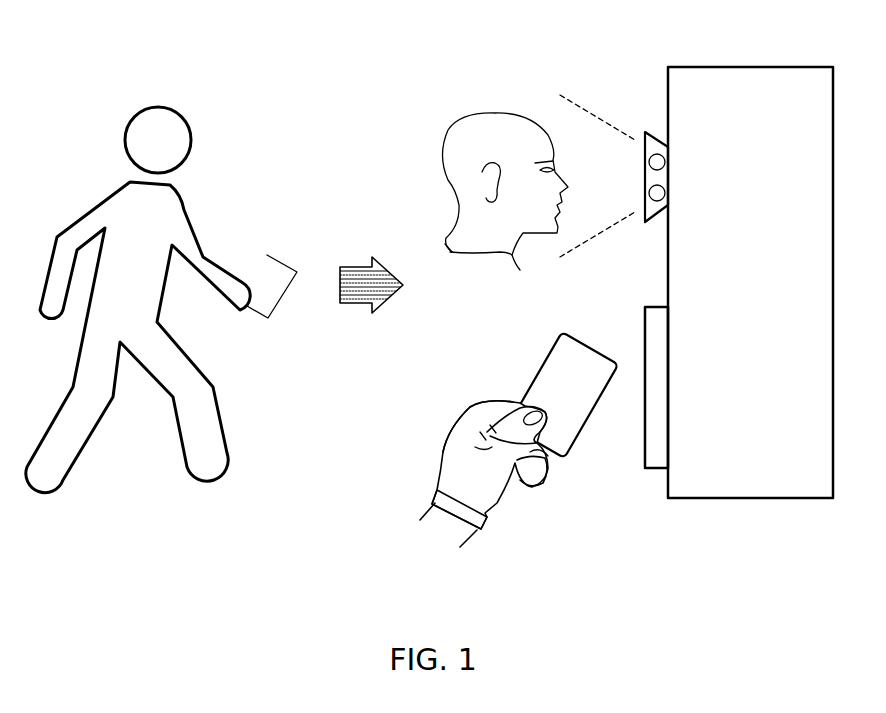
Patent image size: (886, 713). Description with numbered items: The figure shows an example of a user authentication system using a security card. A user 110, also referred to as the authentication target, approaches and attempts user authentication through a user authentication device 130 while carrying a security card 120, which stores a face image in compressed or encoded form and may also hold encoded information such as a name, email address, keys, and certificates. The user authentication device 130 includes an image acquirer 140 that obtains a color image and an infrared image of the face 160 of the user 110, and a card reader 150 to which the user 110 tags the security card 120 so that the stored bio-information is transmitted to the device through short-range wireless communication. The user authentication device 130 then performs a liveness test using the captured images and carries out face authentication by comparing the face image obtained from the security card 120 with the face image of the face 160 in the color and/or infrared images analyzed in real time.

The user 110 is at (207, 124).
The security card 120 is at (283, 257).
The user authentication device 130 is at (752, 66).
The image acquirer 140 is at (645, 132).
The card reader 150 is at (645, 473).
The face 160 is at (493, 113).